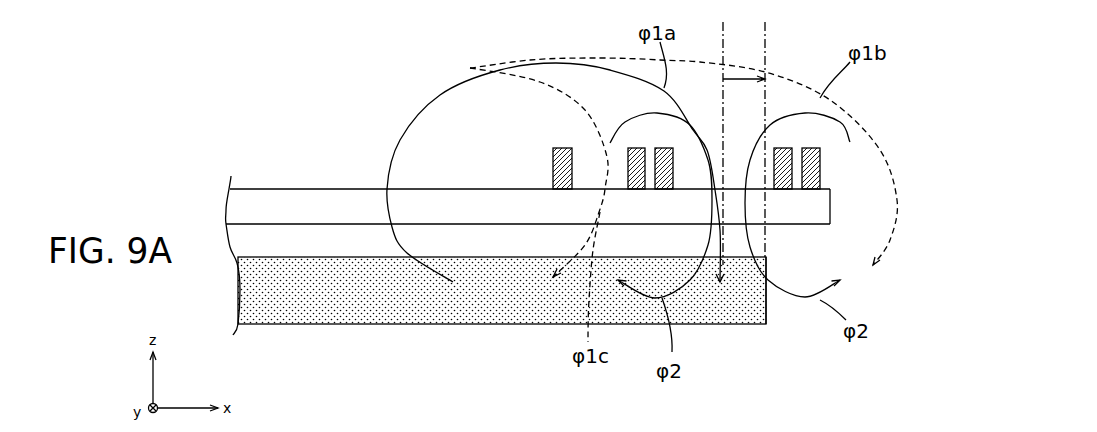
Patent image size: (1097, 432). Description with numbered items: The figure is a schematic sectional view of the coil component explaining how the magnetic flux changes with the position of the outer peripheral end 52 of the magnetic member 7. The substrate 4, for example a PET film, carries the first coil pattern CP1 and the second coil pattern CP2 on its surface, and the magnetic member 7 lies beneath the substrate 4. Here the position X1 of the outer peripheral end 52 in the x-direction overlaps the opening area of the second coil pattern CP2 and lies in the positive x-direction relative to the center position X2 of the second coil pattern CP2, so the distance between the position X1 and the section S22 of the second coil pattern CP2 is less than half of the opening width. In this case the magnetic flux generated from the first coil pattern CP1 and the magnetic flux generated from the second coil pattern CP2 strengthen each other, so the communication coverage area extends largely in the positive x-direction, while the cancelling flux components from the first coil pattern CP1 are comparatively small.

The substrate 4 is at (287, 196).
The magnetic member 7 is at (326, 305).
The outer peripheral end 52 is at (770, 313).
The first coil pattern CP1 is at (553, 166).
The second coil pattern CP2 is at (637, 189).
The section of the second coil pattern S22 is at (802, 272).
The position of the outer peripheral end X1 is at (765, 130).
The center position of the second coil pattern X2 is at (723, 132).